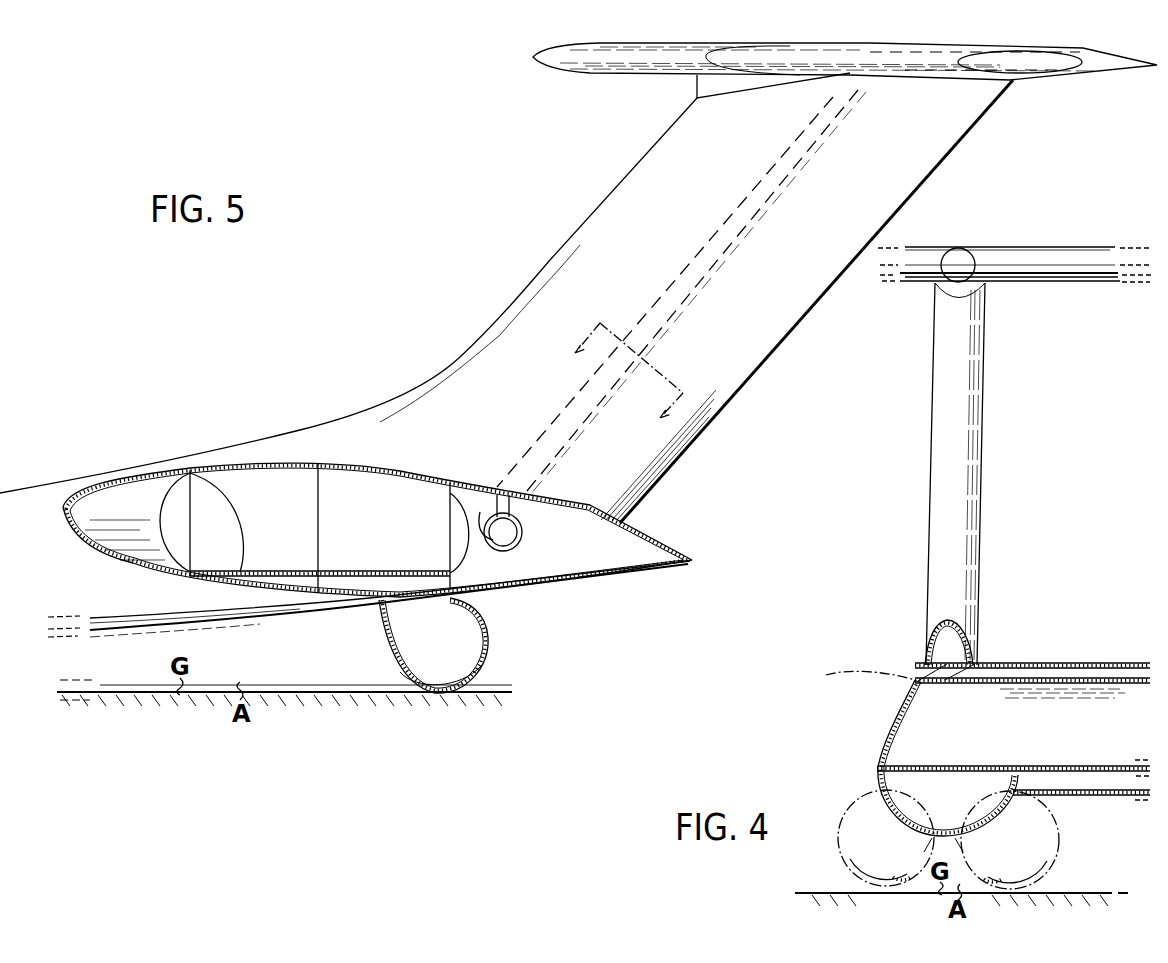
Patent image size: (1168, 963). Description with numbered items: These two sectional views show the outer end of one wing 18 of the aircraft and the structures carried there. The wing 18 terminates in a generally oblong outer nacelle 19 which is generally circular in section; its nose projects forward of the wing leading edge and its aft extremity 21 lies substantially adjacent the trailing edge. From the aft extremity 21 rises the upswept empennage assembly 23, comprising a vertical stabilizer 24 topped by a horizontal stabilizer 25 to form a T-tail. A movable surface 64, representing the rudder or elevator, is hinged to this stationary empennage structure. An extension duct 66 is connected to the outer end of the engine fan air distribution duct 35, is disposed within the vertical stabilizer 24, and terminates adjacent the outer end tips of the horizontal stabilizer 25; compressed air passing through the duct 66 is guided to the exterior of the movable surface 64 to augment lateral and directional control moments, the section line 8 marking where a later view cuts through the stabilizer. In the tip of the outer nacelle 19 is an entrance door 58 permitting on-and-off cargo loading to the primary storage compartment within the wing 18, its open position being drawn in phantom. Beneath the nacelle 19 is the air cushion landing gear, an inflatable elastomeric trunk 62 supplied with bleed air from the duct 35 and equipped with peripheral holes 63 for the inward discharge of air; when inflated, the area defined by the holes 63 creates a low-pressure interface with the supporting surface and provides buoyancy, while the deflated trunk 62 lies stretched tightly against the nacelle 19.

In FIG. 5, the section line 8— 8 is at (619, 386).
In FIG. 4, the wing 18 is at (1048, 665).
In FIG. 5, the outer nacelle 19 is at (30, 494).
In FIG. 4, the outer nacelle 19 is at (880, 778).
In FIG. 5, the aft extremity 21 is at (686, 566).
In FIG. 5, the empennage assembly 23 is at (549, 155).
In FIG. 4, the empennage assembly 23 is at (1060, 374).
In FIG. 5, the vertical stabilizer 24 is at (514, 296).
In FIG. 4, the vertical stabilizer 24 is at (982, 480).
In FIG. 5, the horizontal stabilizer 25 is at (822, 66).
In FIG. 4, the horizontal stabilizer 25 is at (1084, 284).
In FIG. 5, the engine fan air distribution duct 35 is at (522, 535).
In FIG. 4, the entrance door 58 is at (853, 674).
In FIG. 5, the inflatable elastomeric trunk 62 is at (496, 638).
In FIG. 4, the inflatable elastomeric trunk 62 is at (905, 826).
In FIG. 5, the peripheral holes 63 is at (428, 686).
In FIG. 4, the peripheral holes 63 is at (896, 882).
In FIG. 5, the movable surface 64 is at (1128, 70).
In FIG. 5, the extension duct 66 is at (736, 215).